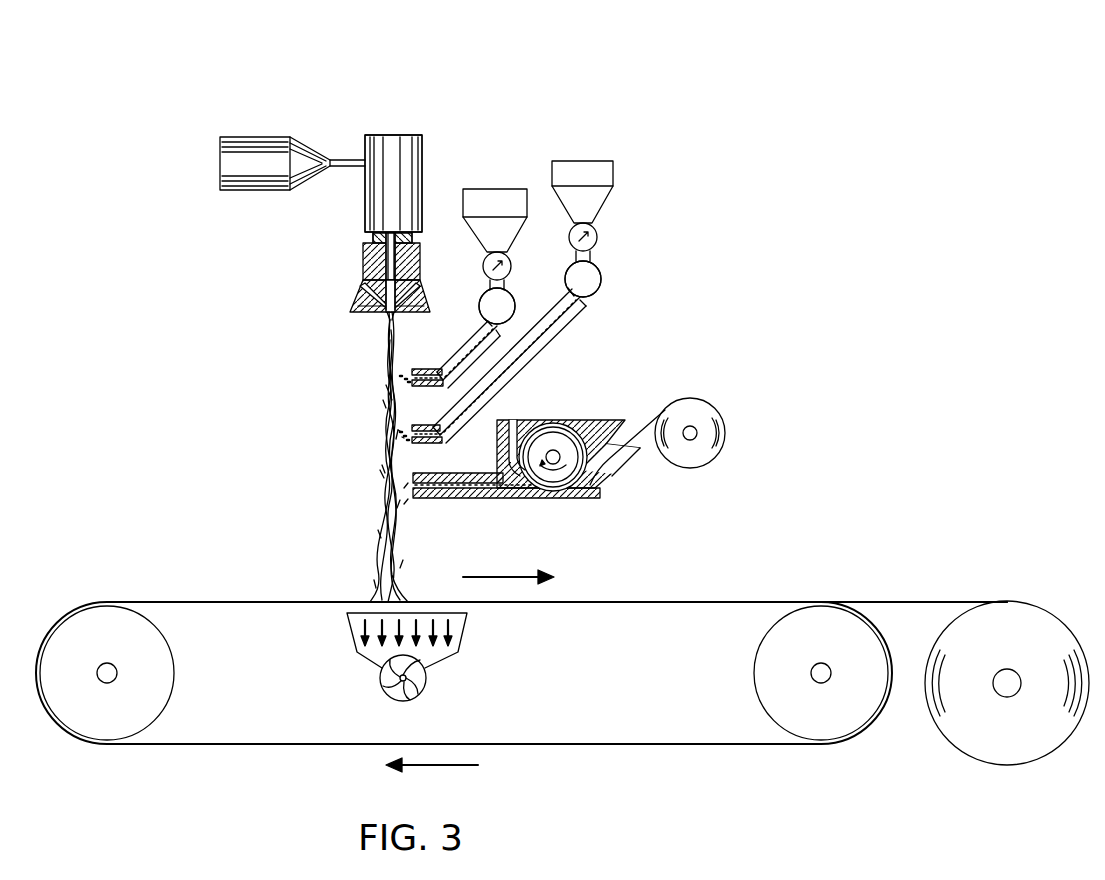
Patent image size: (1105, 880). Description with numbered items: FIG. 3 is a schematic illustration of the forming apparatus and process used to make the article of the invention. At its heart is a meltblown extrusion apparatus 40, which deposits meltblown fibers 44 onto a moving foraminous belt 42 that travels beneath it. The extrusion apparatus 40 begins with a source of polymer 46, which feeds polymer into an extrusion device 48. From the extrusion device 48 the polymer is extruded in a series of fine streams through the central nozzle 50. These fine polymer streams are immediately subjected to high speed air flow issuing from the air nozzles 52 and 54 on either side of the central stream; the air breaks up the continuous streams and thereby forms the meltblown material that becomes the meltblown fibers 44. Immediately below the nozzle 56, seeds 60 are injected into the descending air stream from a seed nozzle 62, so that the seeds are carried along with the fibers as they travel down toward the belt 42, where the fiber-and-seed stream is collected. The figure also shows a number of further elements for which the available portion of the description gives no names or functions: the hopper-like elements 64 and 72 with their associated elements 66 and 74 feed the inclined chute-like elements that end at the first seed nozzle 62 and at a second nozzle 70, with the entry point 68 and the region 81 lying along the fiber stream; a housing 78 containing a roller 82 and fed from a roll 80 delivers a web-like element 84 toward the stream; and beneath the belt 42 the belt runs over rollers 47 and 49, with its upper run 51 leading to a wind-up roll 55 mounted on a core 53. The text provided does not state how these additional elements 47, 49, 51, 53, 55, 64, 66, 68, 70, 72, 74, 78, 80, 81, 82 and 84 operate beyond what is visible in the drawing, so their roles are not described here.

The meltblown extrusion apparatus 40 is at (382, 106).
The moving foraminous belt 42 is at (272, 600).
The meltblown fibers 44 is at (386, 373).
The source of polymer 46 is at (258, 150).
The belt roller 47 is at (140, 718).
The extrusion device 48 is at (410, 170).
The belt roller 49 is at (818, 722).
The central nozzle 50 is at (372, 262).
The upper run of belt 51 is at (752, 600).
The air nozzle 52 is at (372, 298).
The wind-up core 53 is at (1008, 696).
The air nozzle 54 is at (408, 288).
The wind-up roll 55 is at (1042, 622).
The nozzle 56 is at (385, 318).
The seeds 60 is at (388, 393).
The seed nozzle 62 is at (418, 369).
The first particulate hopper 64 is at (487, 196).
The first feed valve 66 is at (508, 312).
The particulate entry point 68 is at (398, 434).
The second particulate nozzle 70 is at (424, 443).
The second particulate hopper 72 is at (580, 168).
The second feed valve 74 is at (592, 282).
The web feed housing 78 is at (582, 420).
The web supply roll 80 is at (690, 405).
The fiber stream portion 81 is at (384, 470).
The feed roller 82 is at (513, 422).
The web/filament entry 84 is at (406, 497).